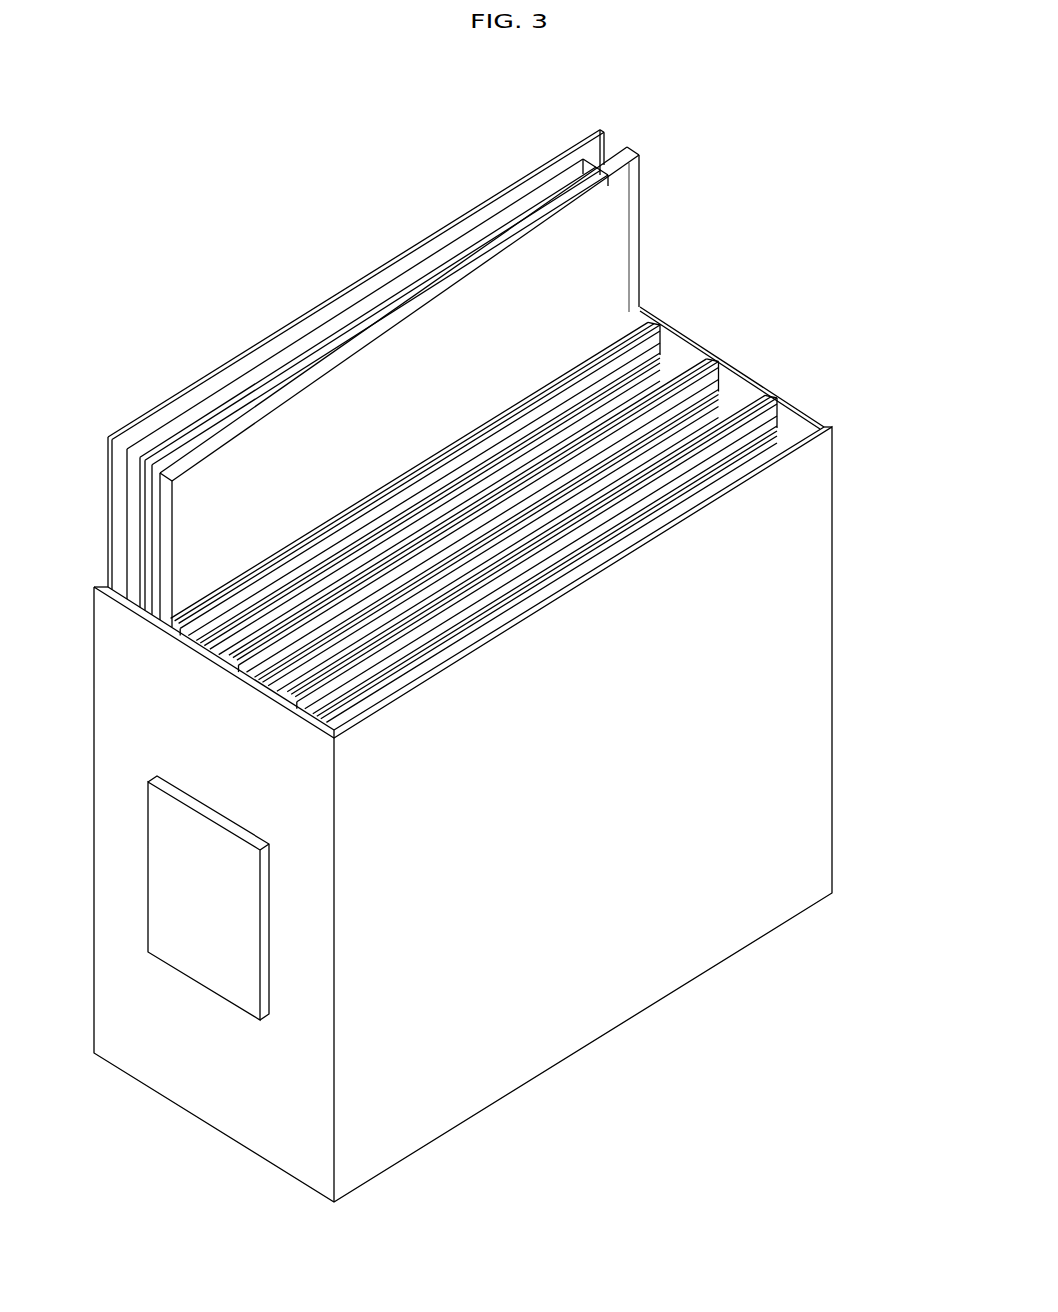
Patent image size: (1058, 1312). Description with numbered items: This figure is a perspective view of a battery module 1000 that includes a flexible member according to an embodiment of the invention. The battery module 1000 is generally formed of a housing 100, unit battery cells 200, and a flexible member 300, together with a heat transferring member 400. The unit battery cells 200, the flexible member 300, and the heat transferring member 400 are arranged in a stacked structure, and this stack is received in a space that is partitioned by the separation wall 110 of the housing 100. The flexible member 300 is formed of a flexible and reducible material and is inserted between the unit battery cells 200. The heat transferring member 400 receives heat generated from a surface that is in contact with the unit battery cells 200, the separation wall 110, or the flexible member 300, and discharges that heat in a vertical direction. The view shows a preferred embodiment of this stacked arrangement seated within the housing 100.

The battery module 1000 is at (262, 224).
The housing 100 is at (706, 340).
The separation wall 110 is at (744, 402).
The unit battery cell 200 is at (582, 186).
The flexible member 300 is at (437, 262).
The heat transferring member 400 is at (598, 132).